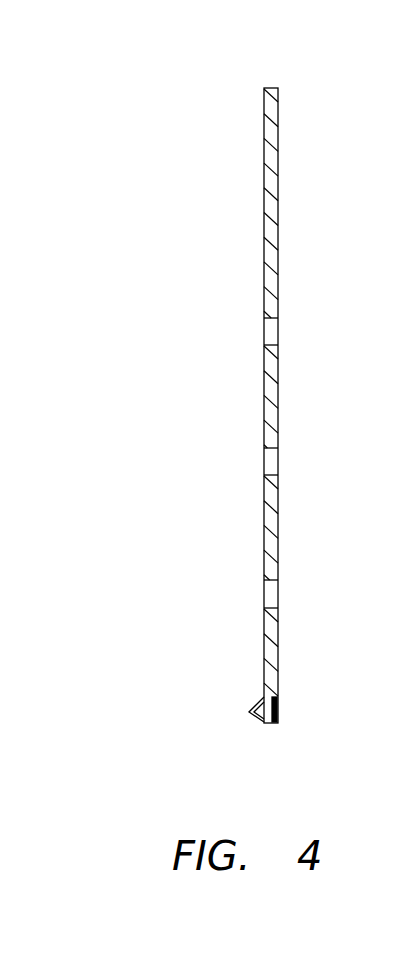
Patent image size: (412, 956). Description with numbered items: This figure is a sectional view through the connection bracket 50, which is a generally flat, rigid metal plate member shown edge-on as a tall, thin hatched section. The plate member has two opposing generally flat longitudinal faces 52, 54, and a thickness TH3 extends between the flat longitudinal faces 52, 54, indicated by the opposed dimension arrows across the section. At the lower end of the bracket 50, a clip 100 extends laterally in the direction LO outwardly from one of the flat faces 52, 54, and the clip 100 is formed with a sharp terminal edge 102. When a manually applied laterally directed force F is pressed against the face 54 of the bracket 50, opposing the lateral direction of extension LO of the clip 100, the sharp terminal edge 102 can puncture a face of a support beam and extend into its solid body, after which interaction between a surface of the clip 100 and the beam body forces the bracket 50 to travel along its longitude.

The connection bracket 50 is at (264, 405).
The flat longitudinal face 52 is at (264, 383).
The flat longitudinal face 54 is at (278, 289).
The clip 100 is at (210, 701).
The sharp terminal edge 102 is at (250, 712).
The thickness TH3 is at (348, 521).
The lateral direction of extension LO is at (237, 711).
The laterally directed force F is at (279, 711).